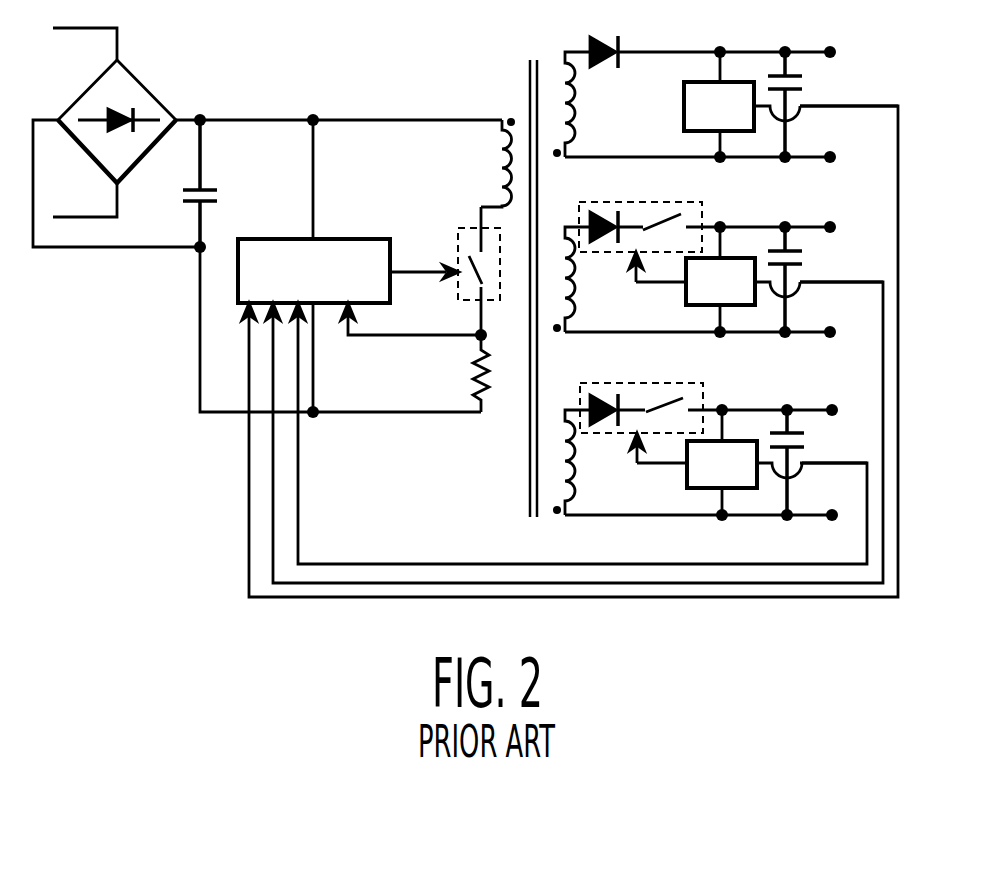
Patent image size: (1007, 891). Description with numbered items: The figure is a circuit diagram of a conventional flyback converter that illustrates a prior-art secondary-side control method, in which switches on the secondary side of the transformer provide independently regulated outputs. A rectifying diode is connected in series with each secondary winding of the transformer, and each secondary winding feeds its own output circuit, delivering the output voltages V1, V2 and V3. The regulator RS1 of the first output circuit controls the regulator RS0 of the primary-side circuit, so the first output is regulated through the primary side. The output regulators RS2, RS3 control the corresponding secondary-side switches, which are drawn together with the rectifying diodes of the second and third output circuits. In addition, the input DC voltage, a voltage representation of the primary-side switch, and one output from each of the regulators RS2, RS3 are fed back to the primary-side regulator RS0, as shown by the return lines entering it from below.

The primary-side regulator RS0 is at (314, 271).
The regulator of the first output circuit RS1 is at (719, 106).
The output regulator RS2 is at (720, 281).
The output regulator RS3 is at (722, 464).
The first output voltage V1 is at (835, 66).
The second output voltage V2 is at (835, 242).
The third output voltage V3 is at (837, 423).